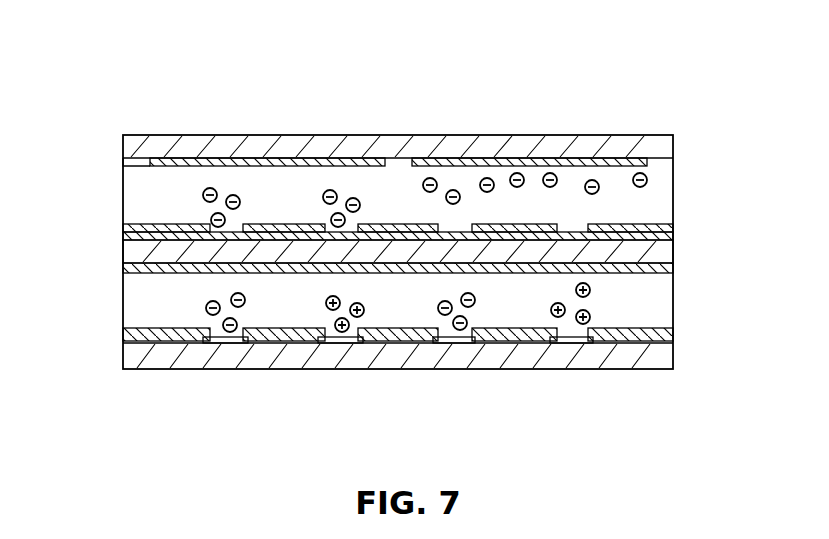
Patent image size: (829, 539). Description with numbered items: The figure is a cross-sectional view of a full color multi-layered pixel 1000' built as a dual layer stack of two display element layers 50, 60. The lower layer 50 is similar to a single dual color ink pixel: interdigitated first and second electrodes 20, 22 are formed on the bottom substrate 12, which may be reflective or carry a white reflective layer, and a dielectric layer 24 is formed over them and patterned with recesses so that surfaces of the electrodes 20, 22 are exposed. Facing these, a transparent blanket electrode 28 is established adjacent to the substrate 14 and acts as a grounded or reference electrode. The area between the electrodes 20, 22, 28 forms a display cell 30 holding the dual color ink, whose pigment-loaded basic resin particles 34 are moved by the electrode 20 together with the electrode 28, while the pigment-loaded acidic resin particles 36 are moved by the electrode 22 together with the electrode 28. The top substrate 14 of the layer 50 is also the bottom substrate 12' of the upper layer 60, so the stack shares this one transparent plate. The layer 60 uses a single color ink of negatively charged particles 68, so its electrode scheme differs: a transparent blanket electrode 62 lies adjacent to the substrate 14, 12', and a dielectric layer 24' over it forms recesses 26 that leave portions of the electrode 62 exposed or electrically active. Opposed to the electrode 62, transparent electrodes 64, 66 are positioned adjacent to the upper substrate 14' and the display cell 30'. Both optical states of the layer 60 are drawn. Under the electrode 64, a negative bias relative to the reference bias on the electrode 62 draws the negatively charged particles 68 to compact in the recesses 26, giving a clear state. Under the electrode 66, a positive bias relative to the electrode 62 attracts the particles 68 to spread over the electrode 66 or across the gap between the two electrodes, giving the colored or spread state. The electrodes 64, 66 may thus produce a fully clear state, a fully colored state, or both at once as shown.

The full color multi-layered pixel 1000' is at (415, 192).
The substrate 14' is at (422, 127).
The electrode 64 is at (333, 162).
The electrode 66 is at (582, 165).
The display cell 30' is at (438, 184).
The negatively charged particles 68 is at (233, 195).
The dielectric layer 24' is at (437, 226).
The recesses 26 is at (573, 216).
The electrode 62 is at (283, 237).
The transparent substrate 14 is at (457, 255).
The bottom substrate 12' is at (457, 255).
The blanket electrode 28 is at (660, 270).
The display cell 30 is at (703, 311).
The pigment-loaded acidic resin particles 36 is at (231, 300).
The pigment-loaded basic resin particles 34 is at (326, 303).
The dielectric layer 24 is at (436, 339).
The first electrode 20 is at (225, 343).
The second electrode 22 is at (342, 343).
The transparent substrate 12 is at (443, 366).
The display element layer 60 is at (115, 192).
The display element layer 50 is at (115, 300).